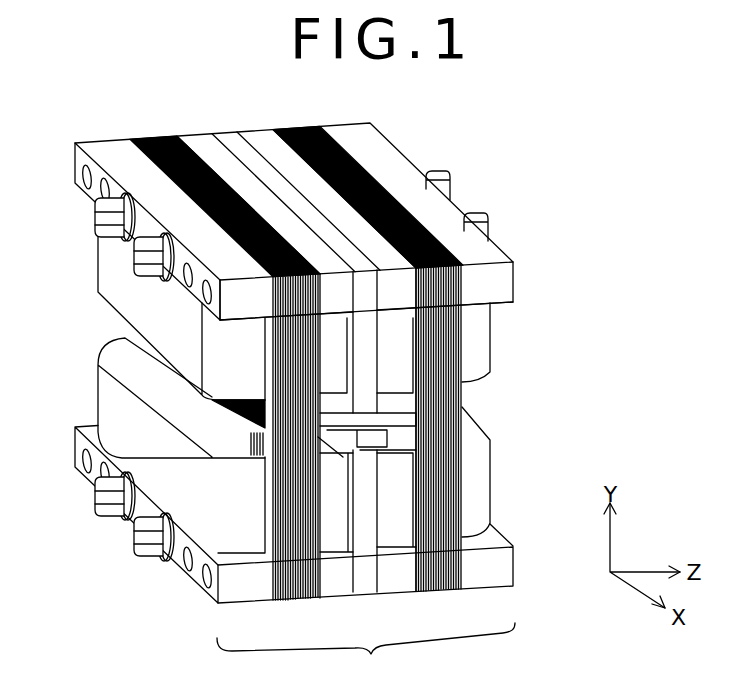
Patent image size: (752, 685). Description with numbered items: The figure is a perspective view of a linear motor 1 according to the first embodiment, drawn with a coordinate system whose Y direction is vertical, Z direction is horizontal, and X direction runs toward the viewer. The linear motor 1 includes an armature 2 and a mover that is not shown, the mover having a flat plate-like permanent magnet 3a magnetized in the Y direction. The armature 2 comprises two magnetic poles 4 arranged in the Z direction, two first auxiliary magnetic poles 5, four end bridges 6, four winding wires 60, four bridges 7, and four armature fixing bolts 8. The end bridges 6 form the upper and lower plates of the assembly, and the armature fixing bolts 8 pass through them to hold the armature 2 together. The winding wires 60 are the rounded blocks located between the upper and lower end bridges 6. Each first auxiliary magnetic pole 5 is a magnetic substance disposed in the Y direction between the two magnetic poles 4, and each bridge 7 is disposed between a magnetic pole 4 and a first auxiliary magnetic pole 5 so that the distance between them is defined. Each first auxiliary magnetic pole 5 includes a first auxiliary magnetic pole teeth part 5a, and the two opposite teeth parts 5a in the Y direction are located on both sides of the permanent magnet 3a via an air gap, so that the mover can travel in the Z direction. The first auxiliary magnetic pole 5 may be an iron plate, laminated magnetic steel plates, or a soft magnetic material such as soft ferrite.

The linear motor 1 is at (610, 657).
The armature 2 is at (366, 653).
The permanent magnet 3a is at (405, 407).
The magnetic pole 4 is at (295, 593).
The first auxiliary magnetic pole 5 is at (223, 140).
The first auxiliary magnetic pole teeth part 5a is at (405, 437).
The end bridge 6 is at (103, 143).
The bridge 7 is at (203, 143).
The armature fixing bolt 8 is at (112, 216).
The winding wire 60 is at (123, 296).